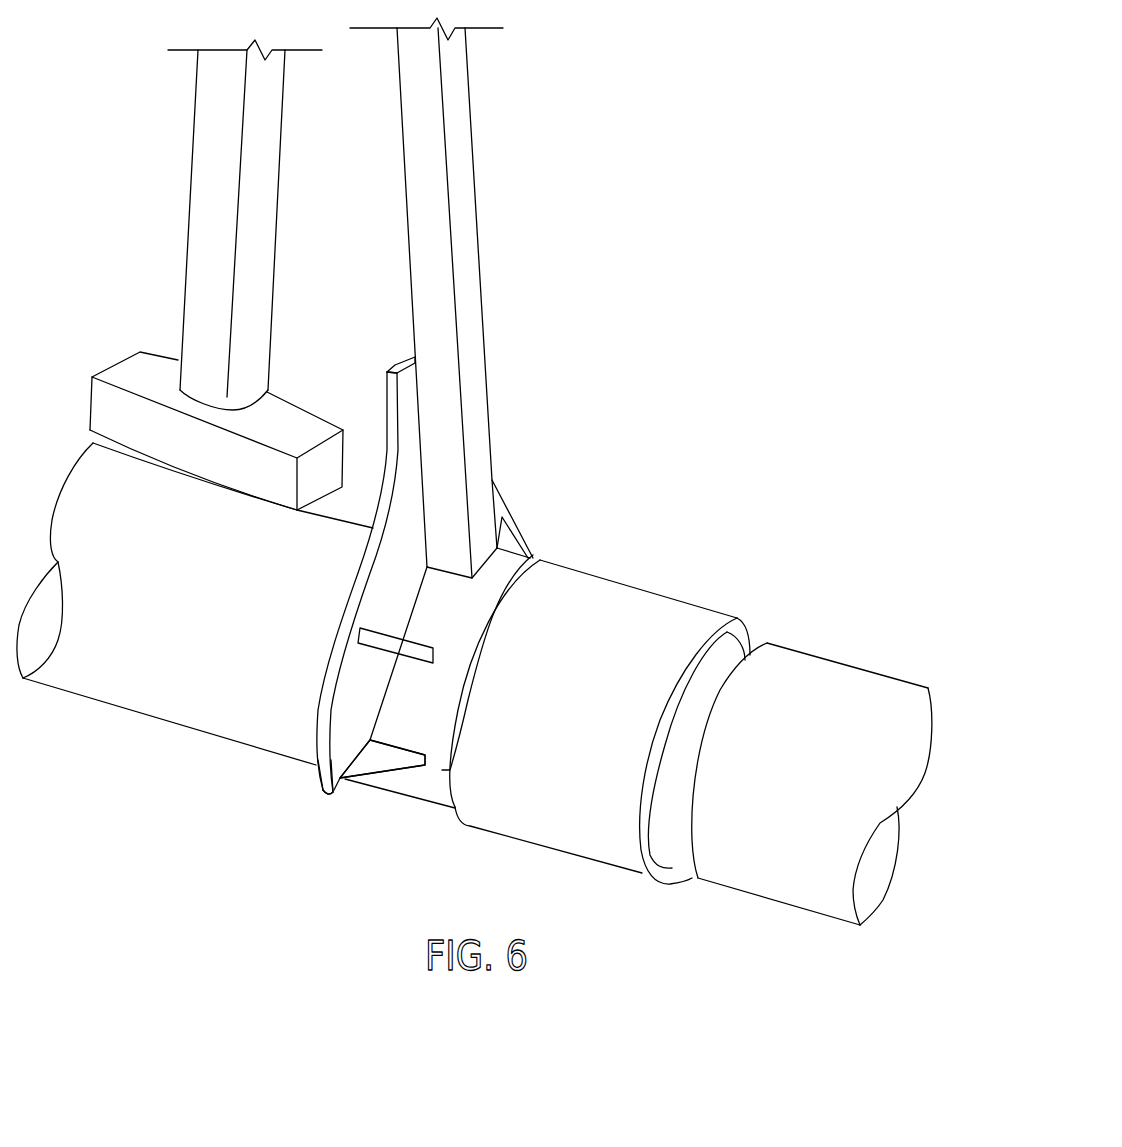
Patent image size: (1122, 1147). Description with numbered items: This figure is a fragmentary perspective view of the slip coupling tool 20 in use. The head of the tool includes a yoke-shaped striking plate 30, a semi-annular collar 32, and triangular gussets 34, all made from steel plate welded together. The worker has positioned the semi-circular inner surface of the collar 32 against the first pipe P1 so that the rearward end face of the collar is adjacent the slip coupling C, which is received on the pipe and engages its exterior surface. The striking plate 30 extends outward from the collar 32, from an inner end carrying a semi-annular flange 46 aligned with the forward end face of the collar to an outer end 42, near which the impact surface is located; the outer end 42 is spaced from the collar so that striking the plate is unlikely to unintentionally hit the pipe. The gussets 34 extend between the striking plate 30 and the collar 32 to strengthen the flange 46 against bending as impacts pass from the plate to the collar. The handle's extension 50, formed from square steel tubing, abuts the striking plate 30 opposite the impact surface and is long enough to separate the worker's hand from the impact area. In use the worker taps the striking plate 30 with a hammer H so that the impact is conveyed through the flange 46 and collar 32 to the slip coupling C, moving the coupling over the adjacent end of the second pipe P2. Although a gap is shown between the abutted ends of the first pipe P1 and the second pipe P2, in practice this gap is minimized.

The slip coupling tool 20 is at (491, 270).
The extension 50 is at (484, 146).
The striking plate 30 is at (387, 373).
The outer end 42 is at (403, 357).
The semi-annular flange 46 is at (320, 775).
The gussets 34 is at (513, 513).
The semi-annular collar 32 is at (532, 557).
The hammer H is at (272, 273).
The slip coupling C is at (693, 602).
The first pipe P1 is at (222, 740).
The second pipe P2 is at (825, 657).